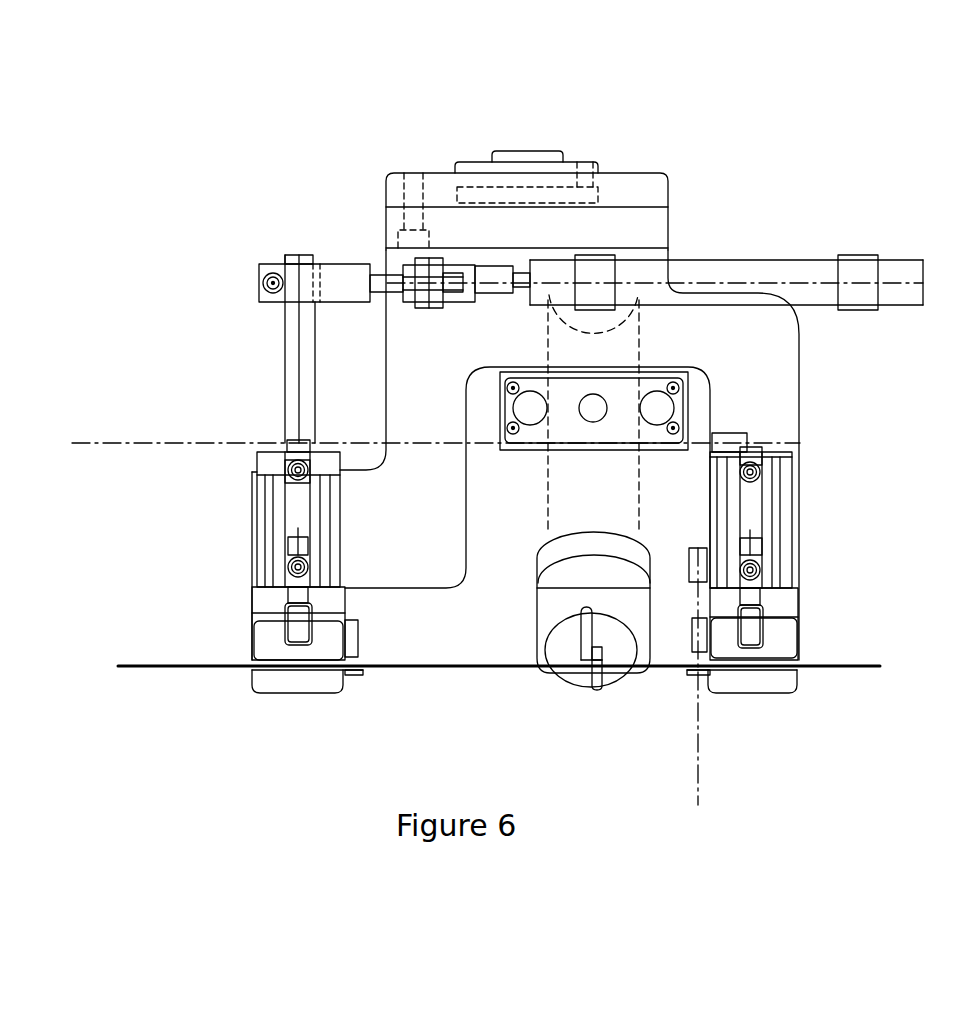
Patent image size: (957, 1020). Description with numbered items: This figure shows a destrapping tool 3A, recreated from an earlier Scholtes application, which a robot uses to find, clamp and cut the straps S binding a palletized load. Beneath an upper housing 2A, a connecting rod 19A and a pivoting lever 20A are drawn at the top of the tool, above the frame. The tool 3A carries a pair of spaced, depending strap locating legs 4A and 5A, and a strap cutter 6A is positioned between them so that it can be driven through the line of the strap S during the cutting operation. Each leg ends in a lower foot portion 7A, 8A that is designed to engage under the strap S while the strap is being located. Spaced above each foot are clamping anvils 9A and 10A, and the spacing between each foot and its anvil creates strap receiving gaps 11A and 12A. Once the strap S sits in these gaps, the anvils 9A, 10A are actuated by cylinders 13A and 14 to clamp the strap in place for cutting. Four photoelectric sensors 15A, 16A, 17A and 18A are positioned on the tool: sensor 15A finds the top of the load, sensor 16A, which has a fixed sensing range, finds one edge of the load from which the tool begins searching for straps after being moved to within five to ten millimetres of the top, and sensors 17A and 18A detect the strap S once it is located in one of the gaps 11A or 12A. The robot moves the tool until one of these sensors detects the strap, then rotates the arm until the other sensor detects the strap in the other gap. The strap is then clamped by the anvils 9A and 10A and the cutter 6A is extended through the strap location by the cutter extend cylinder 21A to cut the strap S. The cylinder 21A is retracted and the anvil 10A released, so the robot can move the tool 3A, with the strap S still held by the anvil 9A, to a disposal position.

The drive housing block 2A is at (668, 184).
The destrapping tool 3A is at (812, 360).
The strap locating leg 4A is at (253, 525).
The strap locating leg 5A is at (800, 523).
The strap cutter 6A is at (582, 684).
The lower foot portion 7A is at (293, 693).
The lower foot portion 8A is at (757, 693).
The clamping anvil 9A is at (268, 638).
The clamping anvil 10A is at (783, 637).
The strap receiving gap 11A is at (248, 658).
The strap receiving gap 12A is at (805, 657).
The cylinder 13A is at (302, 508).
The cylinder 14 is at (752, 505).
The photoelectric sensor 15A is at (715, 441).
The photoelectric sensor 16A is at (687, 560).
The photoelectric sensor 17A is at (690, 645).
The photoelectric sensor 18A is at (358, 640).
The actuating rod 19A is at (773, 283).
The lever arm 20A is at (382, 270).
The cutter extend cylinder 21A is at (684, 402).
The strap S is at (437, 663).